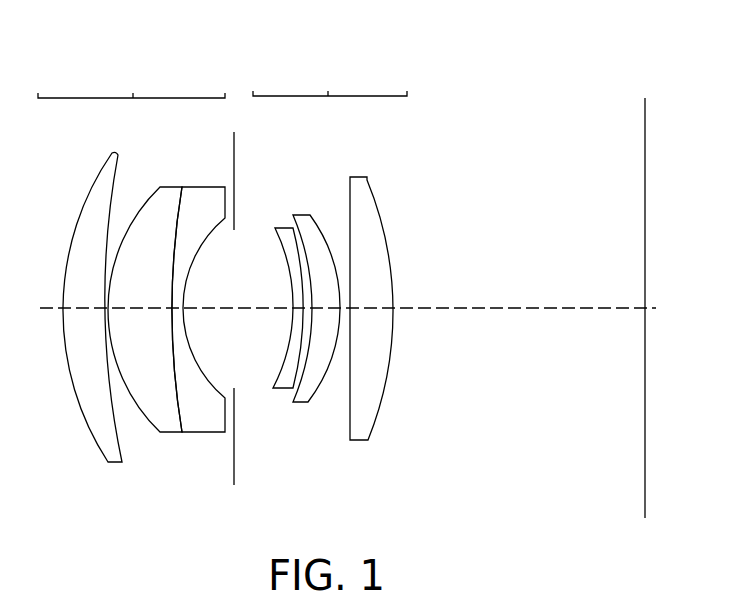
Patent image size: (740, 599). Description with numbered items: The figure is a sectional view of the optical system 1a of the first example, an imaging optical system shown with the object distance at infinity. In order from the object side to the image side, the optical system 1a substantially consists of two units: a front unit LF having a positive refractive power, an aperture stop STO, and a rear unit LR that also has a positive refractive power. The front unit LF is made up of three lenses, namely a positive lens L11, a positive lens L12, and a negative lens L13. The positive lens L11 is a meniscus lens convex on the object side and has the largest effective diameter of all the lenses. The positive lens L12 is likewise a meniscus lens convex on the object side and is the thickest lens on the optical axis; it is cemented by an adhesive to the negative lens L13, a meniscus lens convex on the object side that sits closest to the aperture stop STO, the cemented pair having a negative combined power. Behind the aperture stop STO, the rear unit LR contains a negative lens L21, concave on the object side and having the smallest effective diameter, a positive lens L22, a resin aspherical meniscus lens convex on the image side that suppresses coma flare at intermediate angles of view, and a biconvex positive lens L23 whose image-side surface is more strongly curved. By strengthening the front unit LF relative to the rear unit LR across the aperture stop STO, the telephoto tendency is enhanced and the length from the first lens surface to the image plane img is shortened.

The positive lens L11 is at (79, 291).
The positive lens L12 is at (145, 276).
The negative lens L13 is at (196, 276).
The negative lens L21 is at (276, 254).
The positive lens L22 is at (316, 261).
The positive lens L23 is at (371, 280).
The front unit LF is at (130, 262).
The rear unit LR is at (328, 252).
The aperture stop STO is at (269, 257).
The image plane img is at (656, 295).
The optical system 1a is at (620, 46).